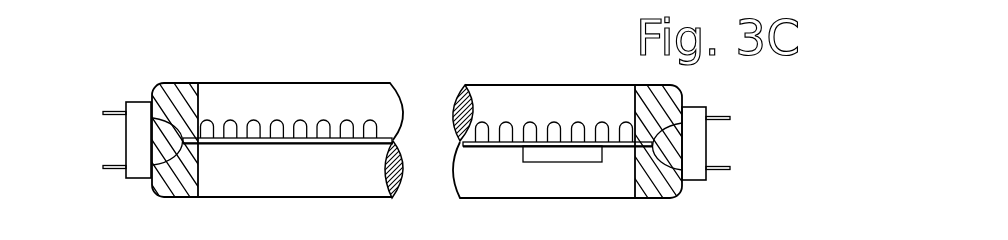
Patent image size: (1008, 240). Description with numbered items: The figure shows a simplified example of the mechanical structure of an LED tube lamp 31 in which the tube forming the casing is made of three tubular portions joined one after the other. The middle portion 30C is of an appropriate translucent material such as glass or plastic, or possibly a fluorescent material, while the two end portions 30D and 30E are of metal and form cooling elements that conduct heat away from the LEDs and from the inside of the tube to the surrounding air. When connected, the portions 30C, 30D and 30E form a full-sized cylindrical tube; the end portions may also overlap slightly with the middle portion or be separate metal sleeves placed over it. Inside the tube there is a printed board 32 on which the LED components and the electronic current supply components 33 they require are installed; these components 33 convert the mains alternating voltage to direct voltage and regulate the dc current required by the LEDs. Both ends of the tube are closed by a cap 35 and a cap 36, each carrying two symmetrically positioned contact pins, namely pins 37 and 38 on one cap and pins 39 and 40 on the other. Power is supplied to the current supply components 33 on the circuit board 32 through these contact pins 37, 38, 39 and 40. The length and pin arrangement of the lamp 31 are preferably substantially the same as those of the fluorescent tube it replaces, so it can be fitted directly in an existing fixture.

The lamp 31 is at (362, 66).
The printed board 32 is at (261, 144).
The current supply components 33 is at (567, 162).
The cap 35 is at (150, 102).
The cap 36 is at (683, 107).
The contact pin 37 is at (103, 112).
The contact pin 38 is at (115, 170).
The contact pin 39 is at (730, 118).
The contact pin 40 is at (730, 170).
The middle tube portion 30C is at (558, 85).
The end tube portion 30D is at (158, 196).
The end tube portion 30E is at (678, 197).